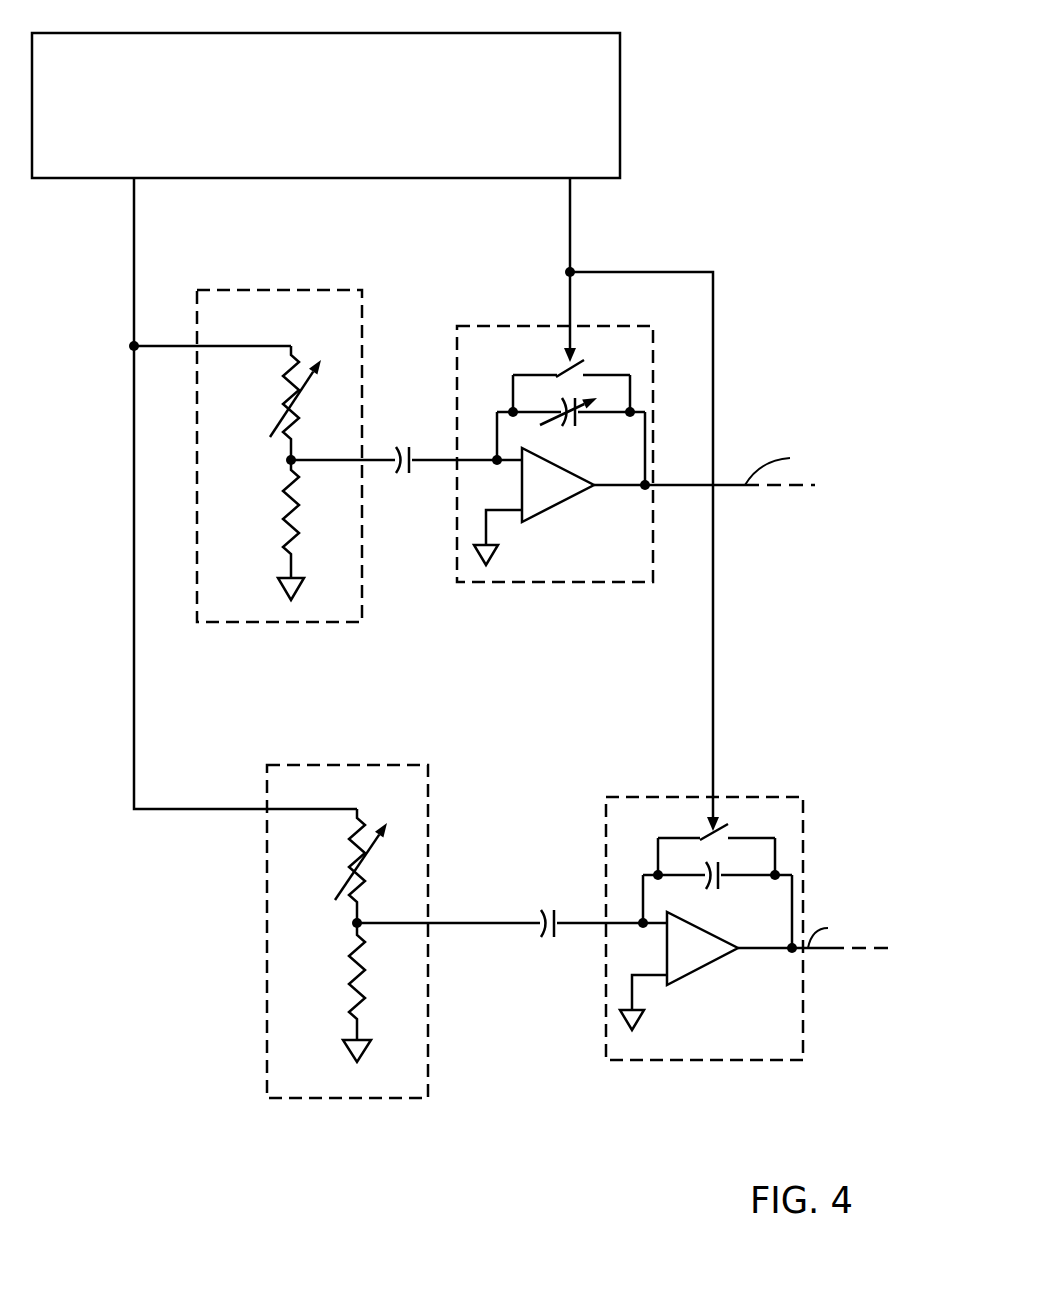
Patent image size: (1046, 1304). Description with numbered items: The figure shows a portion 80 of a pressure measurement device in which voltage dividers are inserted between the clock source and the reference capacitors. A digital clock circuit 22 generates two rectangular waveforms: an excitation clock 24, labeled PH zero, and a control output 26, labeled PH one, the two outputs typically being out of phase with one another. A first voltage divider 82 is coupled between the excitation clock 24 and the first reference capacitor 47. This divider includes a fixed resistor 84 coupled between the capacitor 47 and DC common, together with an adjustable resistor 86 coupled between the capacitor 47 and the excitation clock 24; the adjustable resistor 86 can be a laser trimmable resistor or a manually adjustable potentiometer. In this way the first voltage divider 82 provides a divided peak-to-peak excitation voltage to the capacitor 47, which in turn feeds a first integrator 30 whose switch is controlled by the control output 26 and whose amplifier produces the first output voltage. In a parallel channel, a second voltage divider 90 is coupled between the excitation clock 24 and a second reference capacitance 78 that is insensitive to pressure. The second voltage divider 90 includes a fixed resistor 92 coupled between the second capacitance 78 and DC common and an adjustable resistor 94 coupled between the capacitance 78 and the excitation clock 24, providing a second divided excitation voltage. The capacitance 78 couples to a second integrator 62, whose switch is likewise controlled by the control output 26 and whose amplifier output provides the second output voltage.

The portion of pressure measurement device 80 is at (744, 69).
The digital clock circuit 22 is at (620, 110).
The excitation clock 24 is at (134, 183).
The control output 26 is at (572, 183).
The first voltage divider 82 is at (262, 290).
The adjustable resistor 86 is at (285, 400).
The fixed resistor 84 is at (290, 515).
The first reference capacitor 47 is at (404, 450).
The first integrator 30 is at (533, 326).
The second voltage divider 90 is at (300, 765).
The adjustable resistor 94 is at (352, 862).
The fixed resistor 92 is at (350, 982).
The second reference capacitance 78 is at (540, 912).
The second integrator 62 is at (620, 797).